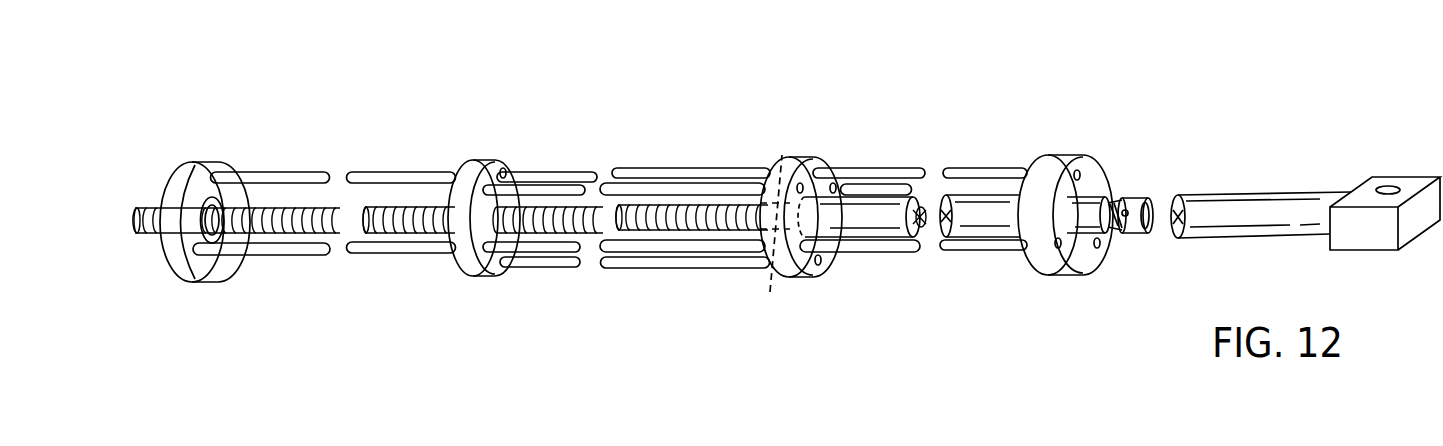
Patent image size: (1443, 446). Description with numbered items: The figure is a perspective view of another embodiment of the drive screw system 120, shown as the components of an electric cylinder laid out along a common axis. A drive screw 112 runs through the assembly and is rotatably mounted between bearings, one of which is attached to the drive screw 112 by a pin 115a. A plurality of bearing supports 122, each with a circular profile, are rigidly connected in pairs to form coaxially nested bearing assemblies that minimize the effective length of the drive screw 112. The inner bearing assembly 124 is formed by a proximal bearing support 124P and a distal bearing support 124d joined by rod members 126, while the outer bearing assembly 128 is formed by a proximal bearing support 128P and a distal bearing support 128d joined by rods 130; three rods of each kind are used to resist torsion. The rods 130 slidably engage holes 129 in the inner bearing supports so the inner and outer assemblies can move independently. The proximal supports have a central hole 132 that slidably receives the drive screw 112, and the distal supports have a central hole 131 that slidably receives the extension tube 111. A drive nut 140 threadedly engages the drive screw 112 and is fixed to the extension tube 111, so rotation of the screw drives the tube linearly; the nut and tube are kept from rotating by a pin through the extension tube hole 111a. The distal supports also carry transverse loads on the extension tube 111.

The extension tube 111 is at (1258, 192).
The extension tube hole 111a is at (1390, 187).
The drive screw 112 is at (387, 228).
The pin 115a is at (1135, 228).
The drive screw system 120 is at (734, 129).
The bearing supports 122 is at (205, 164).
The inner bearing assembly 124 is at (487, 153).
The proximal bearing support 124P is at (482, 278).
The distal bearing support 124d is at (838, 265).
The rod members 126 is at (538, 186).
The outer bearing assembly 128 is at (166, 160).
The proximal bearing support 128P is at (208, 283).
The distal bearing support 128d is at (1084, 275).
The holes 129 is at (503, 170).
The rods 130 is at (297, 173).
The central hole 131 is at (226, 190).
The central hole 132 is at (478, 175).
The drive nut 140 is at (770, 236).